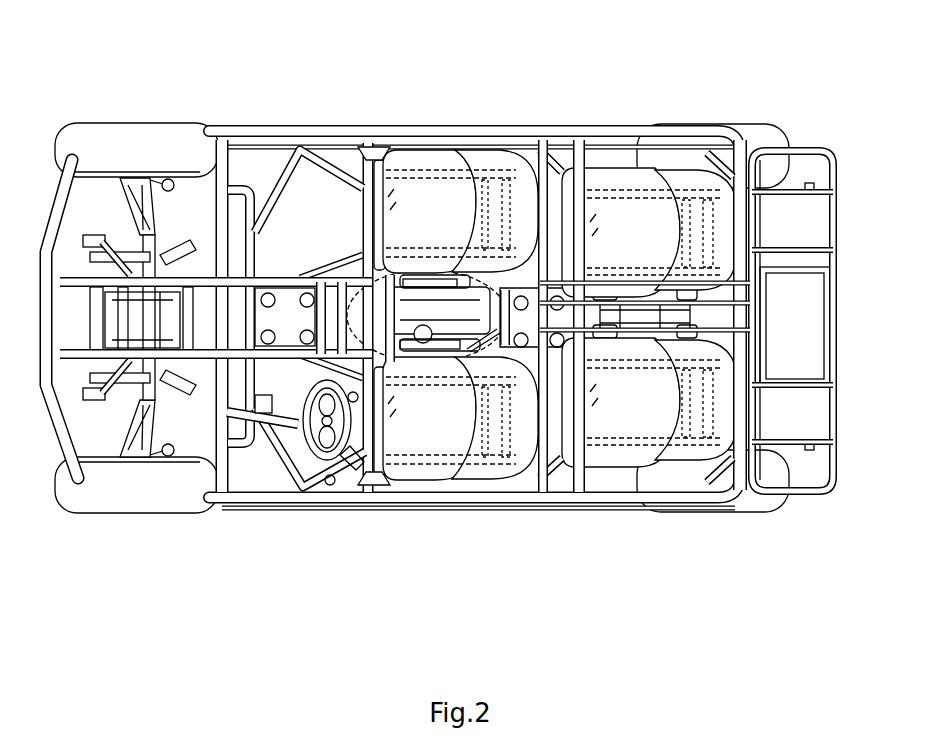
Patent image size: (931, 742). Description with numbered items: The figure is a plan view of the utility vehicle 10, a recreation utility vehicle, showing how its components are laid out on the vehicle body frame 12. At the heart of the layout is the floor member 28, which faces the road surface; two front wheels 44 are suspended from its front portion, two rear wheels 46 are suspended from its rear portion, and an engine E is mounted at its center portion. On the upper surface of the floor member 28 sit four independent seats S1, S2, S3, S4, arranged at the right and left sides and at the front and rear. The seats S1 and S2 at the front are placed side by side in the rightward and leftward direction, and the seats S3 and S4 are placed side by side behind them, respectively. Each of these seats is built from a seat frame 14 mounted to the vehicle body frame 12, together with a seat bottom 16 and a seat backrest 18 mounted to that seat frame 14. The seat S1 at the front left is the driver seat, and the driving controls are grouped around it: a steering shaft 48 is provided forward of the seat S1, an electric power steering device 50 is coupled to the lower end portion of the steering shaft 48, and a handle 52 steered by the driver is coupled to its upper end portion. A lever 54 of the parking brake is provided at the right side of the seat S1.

The utility vehicle 10 is at (158, 30).
The vehicle body frame 12 is at (322, 122).
The seat frame 14 is at (554, 317).
The seat bottom 16 is at (440, 195).
The seat backrest 18 is at (490, 190).
The floor member 28 is at (272, 178).
The front wheel 44 is at (135, 140).
The rear wheel 46 is at (758, 130).
The steering shaft 48 is at (297, 423).
The electric power steering device 50 is at (190, 410).
The handle 52 is at (310, 478).
The lever 54 is at (357, 460).
The engine E is at (425, 268).
The seat S1 is at (430, 427).
The seat S2 is at (428, 200).
The seat S3 is at (623, 407).
The seat S4 is at (624, 215).